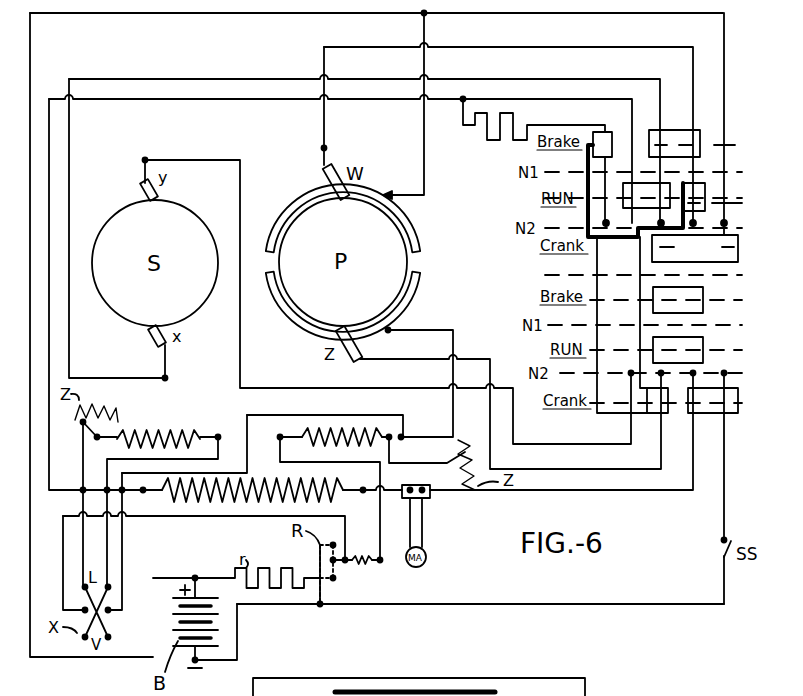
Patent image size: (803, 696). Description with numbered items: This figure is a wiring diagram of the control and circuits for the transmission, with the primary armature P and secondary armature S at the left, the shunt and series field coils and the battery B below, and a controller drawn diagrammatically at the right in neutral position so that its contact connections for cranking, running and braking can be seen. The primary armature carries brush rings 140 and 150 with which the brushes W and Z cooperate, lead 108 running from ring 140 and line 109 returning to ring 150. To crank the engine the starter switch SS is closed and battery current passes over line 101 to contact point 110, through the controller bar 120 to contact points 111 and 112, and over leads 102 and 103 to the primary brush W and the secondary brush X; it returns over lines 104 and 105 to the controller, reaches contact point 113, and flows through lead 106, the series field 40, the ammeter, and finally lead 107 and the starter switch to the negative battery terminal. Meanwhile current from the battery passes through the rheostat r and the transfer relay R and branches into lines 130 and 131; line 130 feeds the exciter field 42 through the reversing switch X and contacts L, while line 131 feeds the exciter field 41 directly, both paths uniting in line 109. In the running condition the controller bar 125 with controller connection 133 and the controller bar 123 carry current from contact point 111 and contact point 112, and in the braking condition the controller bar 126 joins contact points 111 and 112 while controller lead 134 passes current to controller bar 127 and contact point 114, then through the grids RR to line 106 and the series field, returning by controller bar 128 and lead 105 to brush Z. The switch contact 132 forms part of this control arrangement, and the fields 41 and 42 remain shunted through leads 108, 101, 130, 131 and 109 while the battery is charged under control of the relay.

The series field 40 is at (201, 505).
The exciter field 41 is at (327, 436).
The exciter field 42 is at (163, 432).
The line 101 is at (99, 655).
The lead 102 is at (508, 126).
The lead 103 is at (70, 148).
The line 104 is at (604, 444).
The line 105 is at (611, 468).
The lead 106 is at (57, 490).
The lead 107 is at (558, 604).
The lead 108 is at (424, 140).
The line 109 is at (425, 330).
The contact point 110 is at (728, 222).
The contact point 111 is at (710, 223).
The contact point 112 is at (652, 223).
The contact point 113 is at (622, 223).
The contact point 114 is at (594, 221).
The controller bar 120 is at (727, 254).
The controller bar 123 is at (646, 190).
The controller bar 125 is at (727, 201).
The controller bar 126 is at (703, 139).
The controller bar 127 is at (612, 143).
The controller bar 128 is at (703, 293).
The line 130 is at (204, 532).
The line 131 is at (330, 498).
The switch contact 132 is at (326, 593).
The controller connection 133 is at (675, 230).
The controller lead 134 is at (586, 209).
The brush ring 140 is at (289, 208).
The brush ring 150 is at (412, 292).